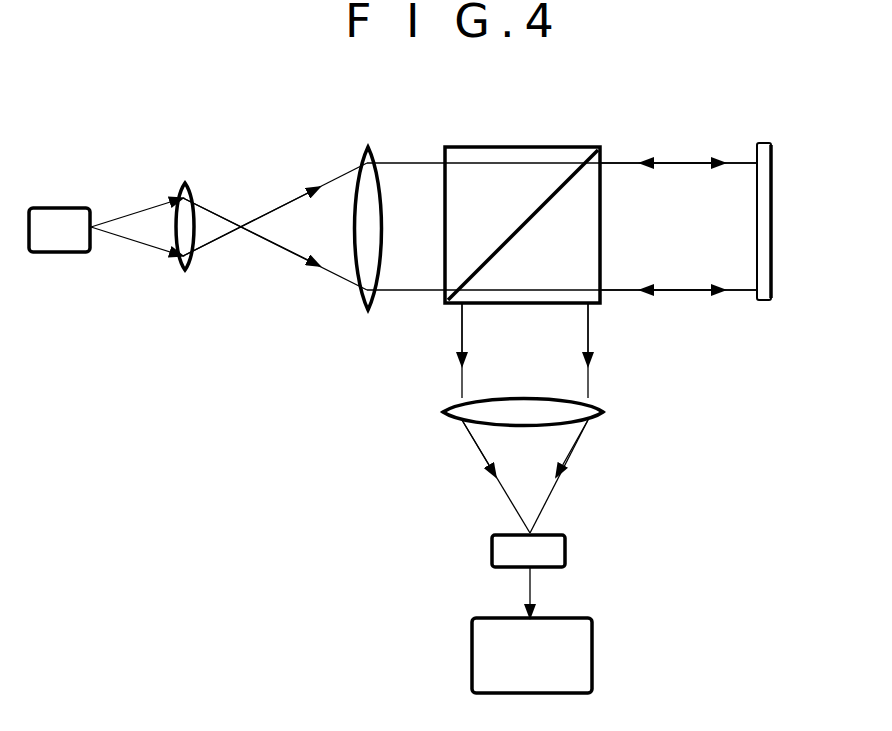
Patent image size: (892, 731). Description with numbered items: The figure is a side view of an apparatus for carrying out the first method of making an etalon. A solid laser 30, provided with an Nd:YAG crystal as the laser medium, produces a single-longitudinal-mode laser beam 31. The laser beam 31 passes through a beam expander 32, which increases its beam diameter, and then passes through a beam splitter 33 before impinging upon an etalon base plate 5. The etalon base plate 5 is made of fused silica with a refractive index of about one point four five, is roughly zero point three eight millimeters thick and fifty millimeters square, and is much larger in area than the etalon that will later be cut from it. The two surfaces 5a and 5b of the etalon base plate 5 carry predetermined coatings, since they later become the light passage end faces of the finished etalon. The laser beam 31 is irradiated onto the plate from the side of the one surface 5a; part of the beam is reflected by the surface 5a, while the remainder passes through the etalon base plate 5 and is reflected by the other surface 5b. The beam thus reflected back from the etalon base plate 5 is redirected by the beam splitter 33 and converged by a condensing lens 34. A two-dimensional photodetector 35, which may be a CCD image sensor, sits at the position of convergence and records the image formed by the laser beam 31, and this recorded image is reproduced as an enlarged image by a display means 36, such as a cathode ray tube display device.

The solid laser 30 is at (60, 205).
The laser beam 31 is at (158, 205).
The beam expander 32 is at (372, 140).
The beam splitter 33 is at (543, 148).
The etalon base plate 5 is at (763, 128).
The surface 5a is at (759, 270).
The surface 5b is at (770, 270).
The condensing lens 34 is at (603, 410).
The two-dimensional photodetector 35 is at (565, 537).
The display means 36 is at (592, 642).